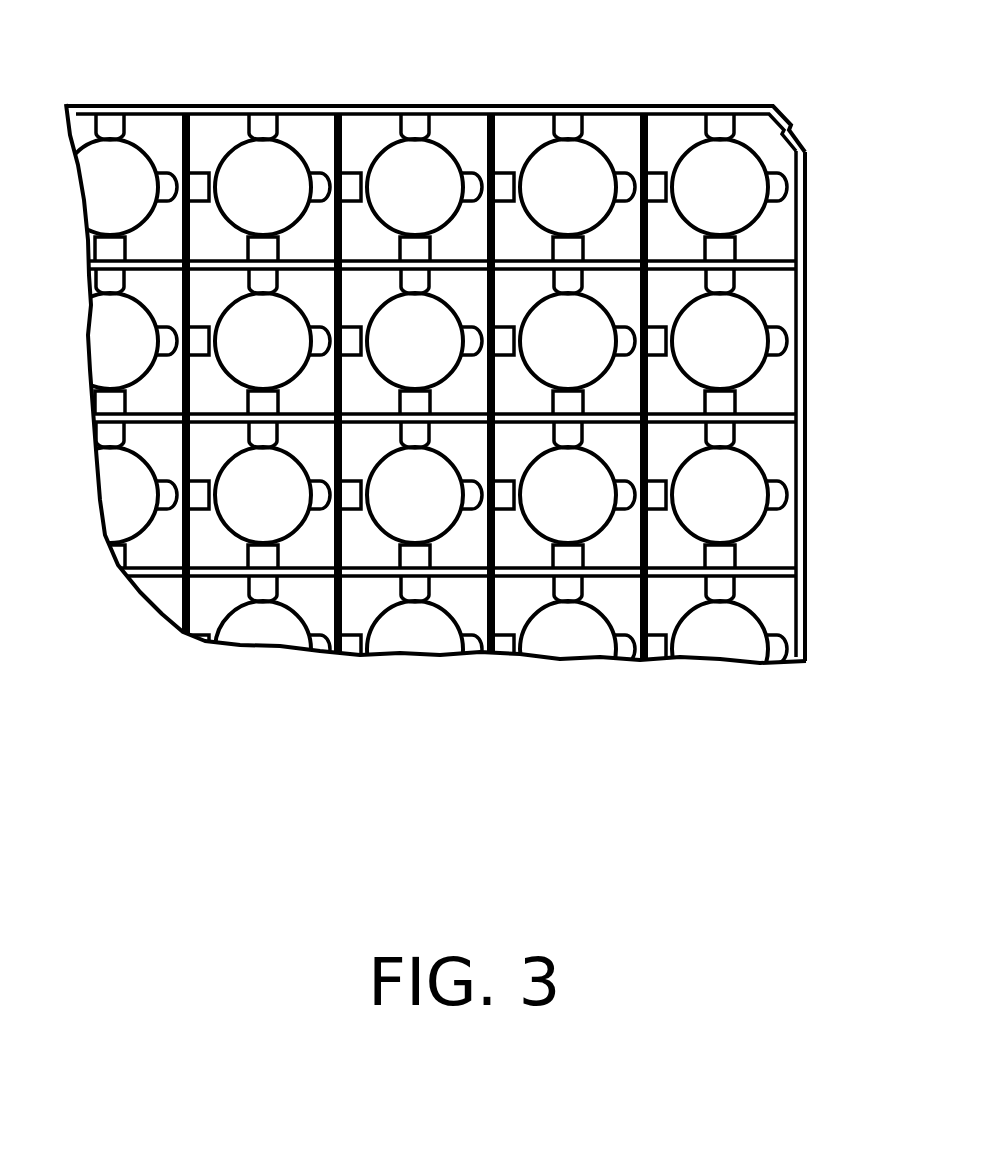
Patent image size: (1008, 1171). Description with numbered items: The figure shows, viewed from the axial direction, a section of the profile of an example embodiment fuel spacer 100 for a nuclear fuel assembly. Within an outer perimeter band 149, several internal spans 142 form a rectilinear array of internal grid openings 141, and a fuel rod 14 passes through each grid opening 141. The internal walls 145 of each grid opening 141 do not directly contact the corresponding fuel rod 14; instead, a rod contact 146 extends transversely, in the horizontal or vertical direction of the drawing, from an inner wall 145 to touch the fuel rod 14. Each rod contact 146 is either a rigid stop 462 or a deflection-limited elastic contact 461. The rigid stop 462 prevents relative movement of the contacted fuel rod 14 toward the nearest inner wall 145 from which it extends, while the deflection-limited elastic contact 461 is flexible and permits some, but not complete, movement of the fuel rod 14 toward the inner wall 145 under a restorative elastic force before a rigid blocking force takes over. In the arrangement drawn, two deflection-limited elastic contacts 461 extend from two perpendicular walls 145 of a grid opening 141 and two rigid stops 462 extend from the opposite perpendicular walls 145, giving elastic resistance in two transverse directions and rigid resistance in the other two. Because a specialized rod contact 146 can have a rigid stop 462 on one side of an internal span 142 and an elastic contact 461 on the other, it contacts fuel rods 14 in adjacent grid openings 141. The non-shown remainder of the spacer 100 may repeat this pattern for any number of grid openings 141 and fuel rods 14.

The fuel spacer 100 is at (92, 34).
The fuel rod 14 is at (740, 628).
The outer perimeter band 149 is at (390, 105).
The grid opening 141 is at (775, 295).
The internal span 142 is at (776, 415).
The internal wall 145 is at (287, 683).
The rod contact 146 is at (437, 610).
The deflection-limited elastic contact 461 is at (625, 513).
The rigid stop 462 is at (660, 517).